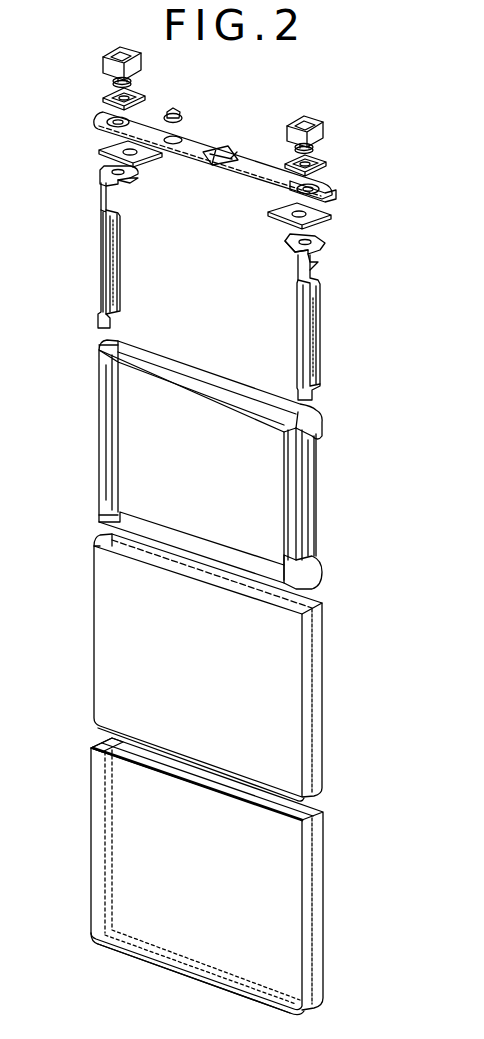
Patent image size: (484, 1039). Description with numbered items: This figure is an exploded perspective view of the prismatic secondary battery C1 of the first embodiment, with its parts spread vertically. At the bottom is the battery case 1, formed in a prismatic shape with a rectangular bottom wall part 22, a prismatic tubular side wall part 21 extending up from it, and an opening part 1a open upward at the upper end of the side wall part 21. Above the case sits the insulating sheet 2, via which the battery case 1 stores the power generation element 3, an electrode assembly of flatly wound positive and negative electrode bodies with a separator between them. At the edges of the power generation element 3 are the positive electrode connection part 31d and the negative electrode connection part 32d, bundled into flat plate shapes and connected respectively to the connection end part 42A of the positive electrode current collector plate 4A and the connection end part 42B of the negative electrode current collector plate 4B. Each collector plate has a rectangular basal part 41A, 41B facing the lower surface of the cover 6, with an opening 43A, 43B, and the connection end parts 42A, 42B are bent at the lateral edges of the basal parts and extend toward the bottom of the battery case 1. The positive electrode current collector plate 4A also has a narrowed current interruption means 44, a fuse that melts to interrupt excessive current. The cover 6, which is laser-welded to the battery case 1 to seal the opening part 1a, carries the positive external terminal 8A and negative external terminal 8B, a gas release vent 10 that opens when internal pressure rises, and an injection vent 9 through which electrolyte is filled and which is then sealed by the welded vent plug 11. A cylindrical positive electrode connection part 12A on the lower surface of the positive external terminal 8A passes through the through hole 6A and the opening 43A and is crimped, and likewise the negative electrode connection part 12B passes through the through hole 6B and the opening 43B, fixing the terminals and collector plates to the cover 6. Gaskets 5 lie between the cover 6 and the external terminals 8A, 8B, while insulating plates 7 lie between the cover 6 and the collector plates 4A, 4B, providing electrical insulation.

The battery case 1 is at (332, 905).
The opening part 1a is at (93, 745).
The insulating sheet 2 is at (328, 699).
The power generation element 3 is at (324, 494).
The positive electrode current collector plate 4A is at (322, 325).
The negative electrode current collector plate 4B is at (103, 267).
The gasket 5 is at (102, 99).
The cover 6 is at (258, 163).
The through hole 6A is at (330, 187).
The through hole 6B is at (106, 121).
The insulating plate 7 is at (98, 151).
The positive external terminal 8A is at (323, 123).
The negative external terminal 8B is at (103, 60).
The injection vent 9 is at (180, 137).
The gas release vent 10 is at (216, 150).
The vent plug 11 is at (171, 108).
The positive electrode connection part 12A is at (313, 147).
The negative electrode connection part 12B is at (112, 83).
The side wall part 21 is at (138, 877).
The bottom wall part 22 is at (170, 968).
The positive electrode connection part 31d is at (310, 527).
The negative electrode connection part 32d is at (104, 451).
The basal part 41A is at (326, 243).
The basal part 41B is at (99, 176).
The connection end part 42A is at (317, 368).
The connection end part 42B is at (105, 296).
The opening 43A is at (285, 241).
The opening 43B is at (133, 183).
The current interruption means 44 is at (314, 262).
The prismatic secondary battery C1 is at (418, 150).